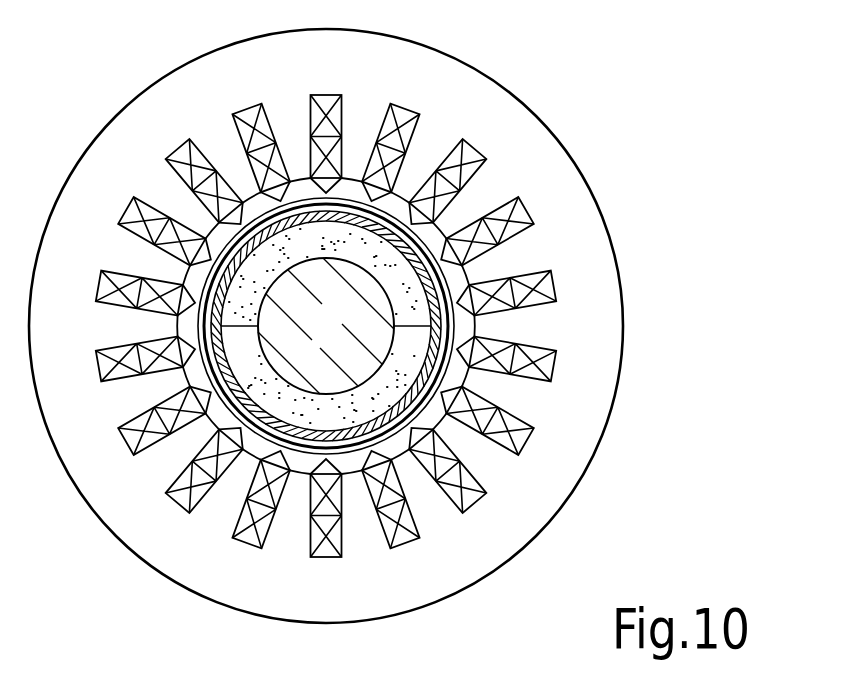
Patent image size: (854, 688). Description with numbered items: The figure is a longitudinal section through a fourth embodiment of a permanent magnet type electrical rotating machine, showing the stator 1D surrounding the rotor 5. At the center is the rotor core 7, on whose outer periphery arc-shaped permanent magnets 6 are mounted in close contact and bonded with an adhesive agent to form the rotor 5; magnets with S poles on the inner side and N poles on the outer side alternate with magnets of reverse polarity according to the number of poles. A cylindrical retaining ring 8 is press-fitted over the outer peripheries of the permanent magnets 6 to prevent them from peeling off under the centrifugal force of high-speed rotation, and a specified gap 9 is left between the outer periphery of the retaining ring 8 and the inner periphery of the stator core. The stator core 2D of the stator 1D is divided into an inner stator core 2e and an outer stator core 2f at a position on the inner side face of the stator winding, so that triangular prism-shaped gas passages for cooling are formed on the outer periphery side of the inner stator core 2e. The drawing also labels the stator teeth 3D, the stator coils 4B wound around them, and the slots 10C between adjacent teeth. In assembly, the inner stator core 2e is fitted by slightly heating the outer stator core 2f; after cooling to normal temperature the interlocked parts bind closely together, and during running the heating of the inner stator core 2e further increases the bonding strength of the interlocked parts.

The stator 1D is at (462, 83).
The stator core 2D is at (472, 564).
The inner stator core 2e is at (463, 380).
The outer stator core 2f is at (610, 350).
The stator pole tooth 3D is at (116, 297).
The coil 4B is at (185, 148).
The rotor 5 is at (424, 238).
The permanent magnets 6 is at (262, 262).
The rotor core 7 is at (320, 338).
The retaining ring 8 is at (398, 222).
The gap 9 is at (468, 272).
The slot 10C is at (295, 147).